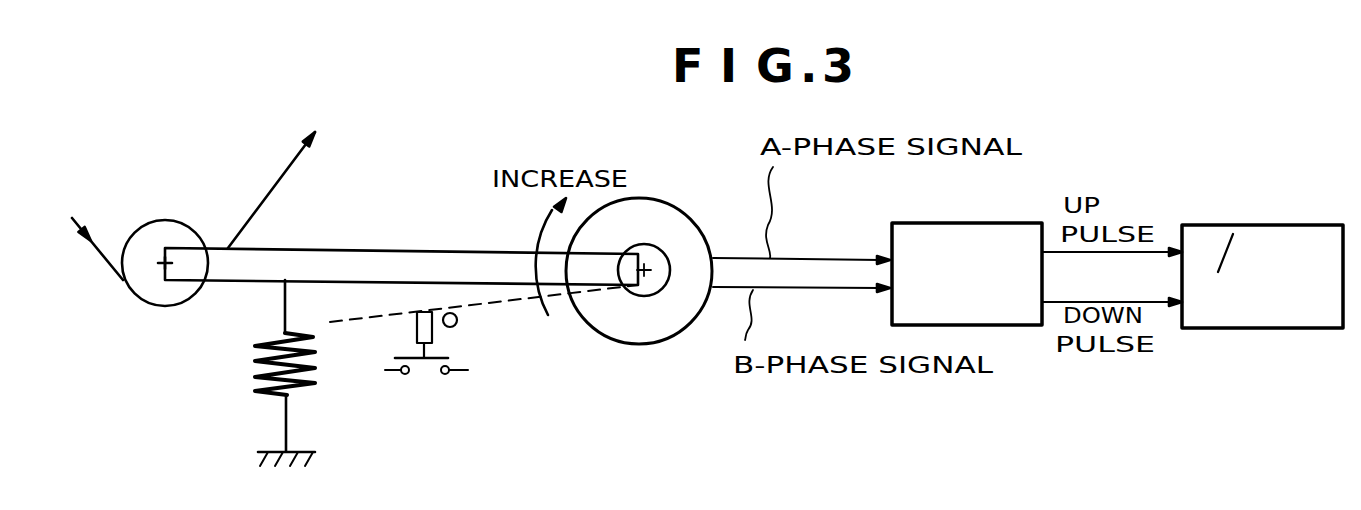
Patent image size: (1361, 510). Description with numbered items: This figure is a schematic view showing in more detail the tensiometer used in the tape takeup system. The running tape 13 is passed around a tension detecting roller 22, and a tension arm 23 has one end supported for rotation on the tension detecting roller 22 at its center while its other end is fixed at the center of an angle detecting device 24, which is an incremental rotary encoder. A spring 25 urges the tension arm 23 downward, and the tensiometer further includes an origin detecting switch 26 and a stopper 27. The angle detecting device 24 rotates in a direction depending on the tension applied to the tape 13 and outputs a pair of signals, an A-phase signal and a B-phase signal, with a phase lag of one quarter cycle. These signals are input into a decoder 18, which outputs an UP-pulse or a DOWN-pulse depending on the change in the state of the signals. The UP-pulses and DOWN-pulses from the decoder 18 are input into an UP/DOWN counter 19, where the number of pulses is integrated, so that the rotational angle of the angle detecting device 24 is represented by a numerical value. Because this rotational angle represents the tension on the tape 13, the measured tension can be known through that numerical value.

The tape 13 is at (277, 180).
The decoder 18 is at (995, 222).
The UP/DOWN counter 19 is at (1238, 225).
The tension detecting roller 22 is at (170, 230).
The tension arm 23 is at (398, 262).
The angle detecting device 24 is at (687, 237).
The spring 25 is at (257, 375).
The origin detecting switch 26 is at (385, 362).
The stopper 27 is at (457, 326).